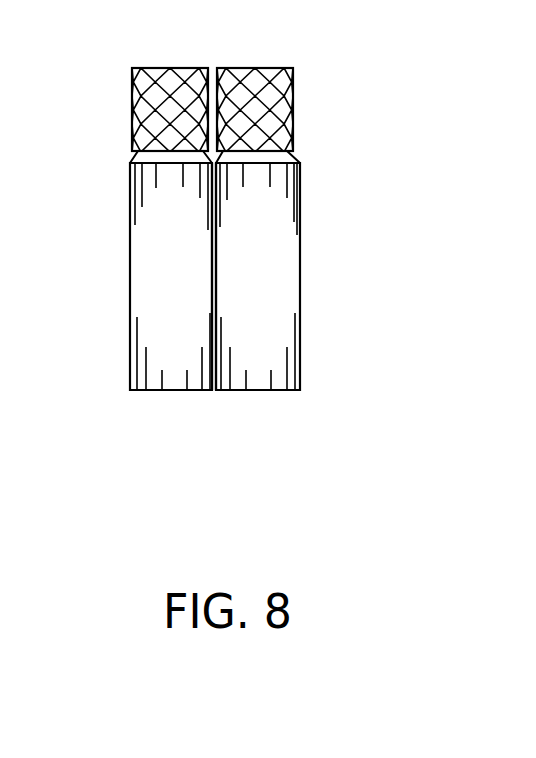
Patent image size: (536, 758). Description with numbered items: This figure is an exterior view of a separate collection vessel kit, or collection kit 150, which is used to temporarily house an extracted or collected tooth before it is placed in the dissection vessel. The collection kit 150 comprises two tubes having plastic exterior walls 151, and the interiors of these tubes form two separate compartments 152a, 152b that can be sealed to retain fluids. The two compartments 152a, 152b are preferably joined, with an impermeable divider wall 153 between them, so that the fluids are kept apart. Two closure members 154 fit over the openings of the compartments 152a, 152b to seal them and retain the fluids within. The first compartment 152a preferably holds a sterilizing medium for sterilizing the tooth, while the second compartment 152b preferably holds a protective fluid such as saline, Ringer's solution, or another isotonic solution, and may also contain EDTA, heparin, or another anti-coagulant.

The collection kit 150 is at (228, 432).
The plastic exterior walls 151 is at (300, 248).
The first compartment 152a is at (147, 252).
The second compartment 152b is at (290, 344).
The impermeable divider wall 153 is at (216, 390).
The closure members 154 is at (158, 67).